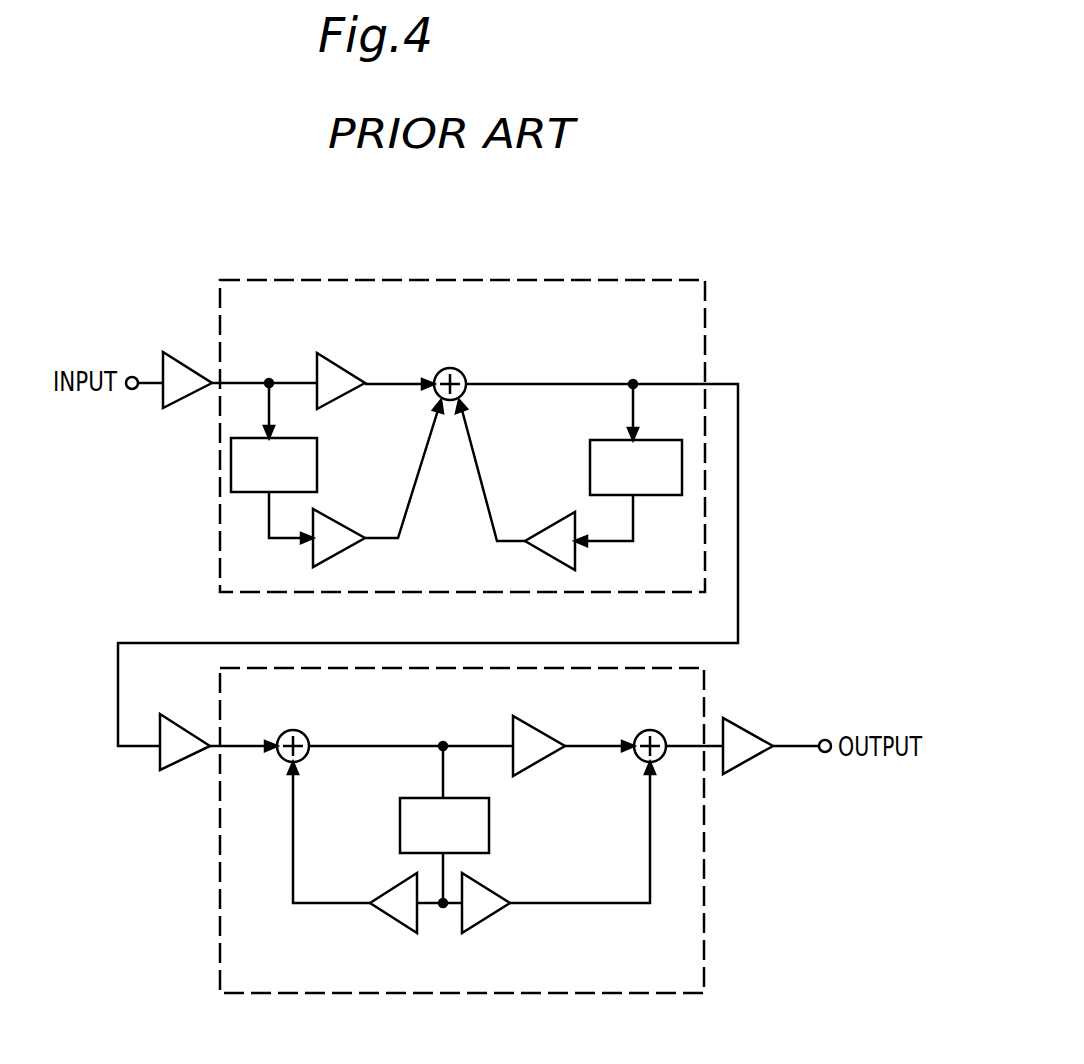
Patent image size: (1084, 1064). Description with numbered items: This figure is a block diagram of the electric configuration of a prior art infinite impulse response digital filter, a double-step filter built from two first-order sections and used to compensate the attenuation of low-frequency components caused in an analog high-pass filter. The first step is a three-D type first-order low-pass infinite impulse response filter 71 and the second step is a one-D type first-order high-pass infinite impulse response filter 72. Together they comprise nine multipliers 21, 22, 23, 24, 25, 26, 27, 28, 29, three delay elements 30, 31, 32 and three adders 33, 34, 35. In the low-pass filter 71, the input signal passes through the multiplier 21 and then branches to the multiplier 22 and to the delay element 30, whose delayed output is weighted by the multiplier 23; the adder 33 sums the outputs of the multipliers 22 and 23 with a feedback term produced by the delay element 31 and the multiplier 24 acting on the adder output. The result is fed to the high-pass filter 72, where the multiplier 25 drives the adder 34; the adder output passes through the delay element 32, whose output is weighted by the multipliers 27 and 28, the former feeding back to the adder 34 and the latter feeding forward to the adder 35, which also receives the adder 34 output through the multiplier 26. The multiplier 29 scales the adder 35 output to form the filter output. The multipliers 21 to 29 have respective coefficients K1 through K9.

The multiplier 21 is at (183, 360).
The multiplier 22 is at (343, 366).
The multiplier 23 is at (350, 550).
The multiplier 24 is at (553, 518).
The multiplier 25 is at (178, 763).
The multiplier 26 is at (542, 725).
The multiplier 27 is at (395, 922).
The multiplier 28 is at (495, 910).
The multiplier 29 is at (742, 730).
The delay element 30 is at (317, 468).
The delay element 31 is at (663, 495).
The delay element 32 is at (489, 822).
The adder 33 is at (440, 370).
The adder 34 is at (290, 729).
The adder 35 is at (650, 730).
The first-order low-pass infinite impulse response filter 71 is at (705, 320).
The first-order high-pass infinite impulse response filter 72 is at (704, 850).